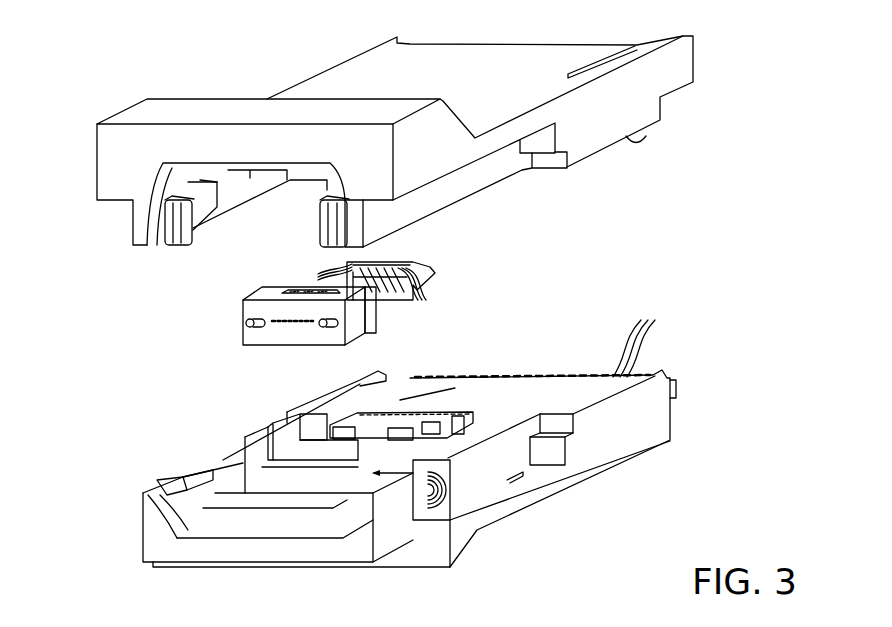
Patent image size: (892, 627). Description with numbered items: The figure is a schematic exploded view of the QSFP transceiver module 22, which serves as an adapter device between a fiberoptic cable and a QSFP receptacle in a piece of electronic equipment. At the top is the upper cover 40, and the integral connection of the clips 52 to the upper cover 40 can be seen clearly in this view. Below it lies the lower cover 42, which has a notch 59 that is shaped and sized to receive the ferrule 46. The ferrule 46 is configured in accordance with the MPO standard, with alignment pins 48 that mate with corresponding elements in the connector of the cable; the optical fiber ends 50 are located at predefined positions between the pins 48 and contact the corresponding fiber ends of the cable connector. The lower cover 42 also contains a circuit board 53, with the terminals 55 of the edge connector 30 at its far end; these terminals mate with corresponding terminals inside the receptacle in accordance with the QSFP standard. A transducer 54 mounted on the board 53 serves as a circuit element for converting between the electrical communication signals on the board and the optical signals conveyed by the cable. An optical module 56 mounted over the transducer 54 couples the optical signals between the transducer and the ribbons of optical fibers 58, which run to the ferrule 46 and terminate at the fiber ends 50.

The QSFP transceiver module 22 is at (146, 44).
The edge connector 30 is at (590, 376).
The upper cover 40 is at (100, 151).
The lower cover 42 is at (150, 540).
The ferrule 46 is at (366, 329).
The alignment pins 48 is at (246, 324).
The optical fiber ends 50 is at (292, 326).
The clips 52 is at (180, 246).
The circuit board 53 is at (455, 388).
The transducer 54 is at (468, 420).
The terminals 55 is at (635, 332).
The optical module 56 is at (440, 268).
The ribbons of optical fibers 58 is at (324, 272).
The notch 59 is at (265, 423).